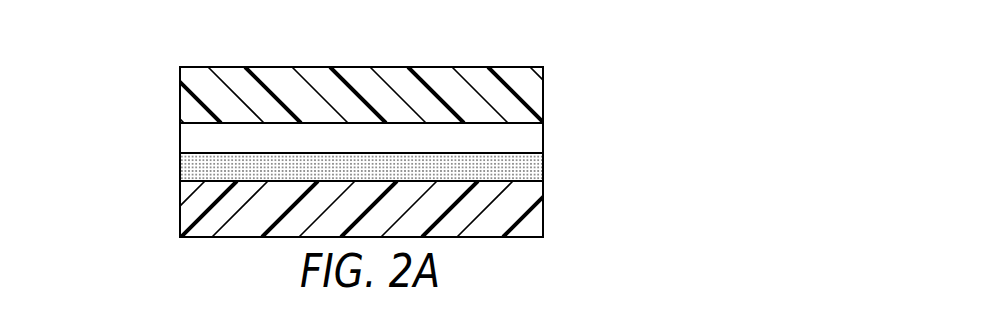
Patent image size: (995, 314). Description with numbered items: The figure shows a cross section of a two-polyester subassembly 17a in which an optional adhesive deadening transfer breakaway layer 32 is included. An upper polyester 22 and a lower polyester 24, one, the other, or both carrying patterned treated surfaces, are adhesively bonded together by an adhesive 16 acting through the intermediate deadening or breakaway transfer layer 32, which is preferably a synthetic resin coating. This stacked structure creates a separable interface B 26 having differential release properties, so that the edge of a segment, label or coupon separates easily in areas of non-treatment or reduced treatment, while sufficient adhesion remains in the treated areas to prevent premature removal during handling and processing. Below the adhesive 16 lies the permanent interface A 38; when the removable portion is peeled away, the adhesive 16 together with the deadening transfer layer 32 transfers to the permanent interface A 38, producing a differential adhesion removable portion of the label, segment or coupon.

The polyester 22 is at (543, 88).
The separable interface B 26 is at (543, 124).
The permanent interface A 38 is at (543, 181).
The polyester 24 is at (543, 202).
The adhesive deadening transfer breakaway layer 32 is at (180, 137).
The adhesive 16 is at (180, 167).
The polyester subassembly 17a is at (98, 67).